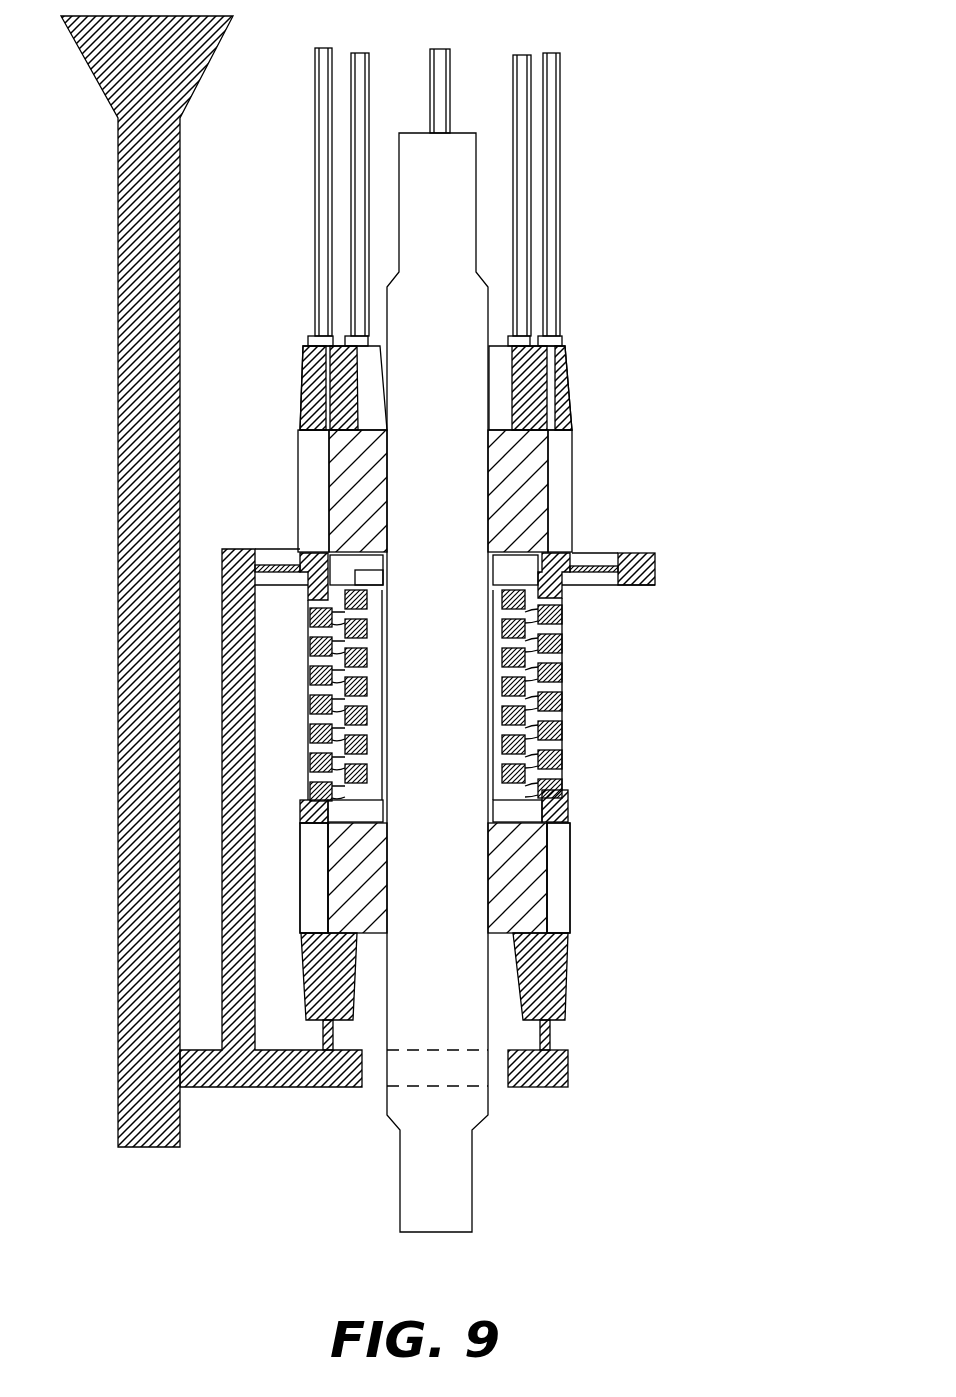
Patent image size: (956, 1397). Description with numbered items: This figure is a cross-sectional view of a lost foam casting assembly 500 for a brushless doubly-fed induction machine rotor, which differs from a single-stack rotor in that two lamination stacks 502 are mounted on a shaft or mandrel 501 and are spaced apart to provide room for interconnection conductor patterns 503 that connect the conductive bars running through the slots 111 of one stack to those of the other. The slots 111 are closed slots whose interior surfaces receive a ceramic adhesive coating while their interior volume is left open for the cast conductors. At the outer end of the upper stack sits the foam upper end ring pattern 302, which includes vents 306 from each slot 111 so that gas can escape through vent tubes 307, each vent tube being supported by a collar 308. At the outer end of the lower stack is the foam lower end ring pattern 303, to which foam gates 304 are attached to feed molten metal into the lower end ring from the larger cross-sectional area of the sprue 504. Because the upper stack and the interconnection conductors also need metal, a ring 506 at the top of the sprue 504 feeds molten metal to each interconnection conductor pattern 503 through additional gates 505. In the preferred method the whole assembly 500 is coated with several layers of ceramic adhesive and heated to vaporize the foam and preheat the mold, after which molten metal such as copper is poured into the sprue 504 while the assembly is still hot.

The assembly 500 is at (779, 1122).
The shaft 501 is at (476, 232).
The lamination stacks 502 is at (572, 467).
The interconnection conductor patterns 503 is at (562, 763).
The sprue 504 is at (118, 777).
The additional gates 505 is at (285, 566).
The ring 506 is at (655, 566).
The slots 111 is at (308, 888).
The upper end ring pattern 302 is at (573, 400).
The lower end ring pattern 303 is at (570, 981).
The foam gates 304 is at (550, 1031).
The vents 306 is at (303, 380).
The vent tubes 307 is at (514, 133).
The collar 308 is at (566, 339).